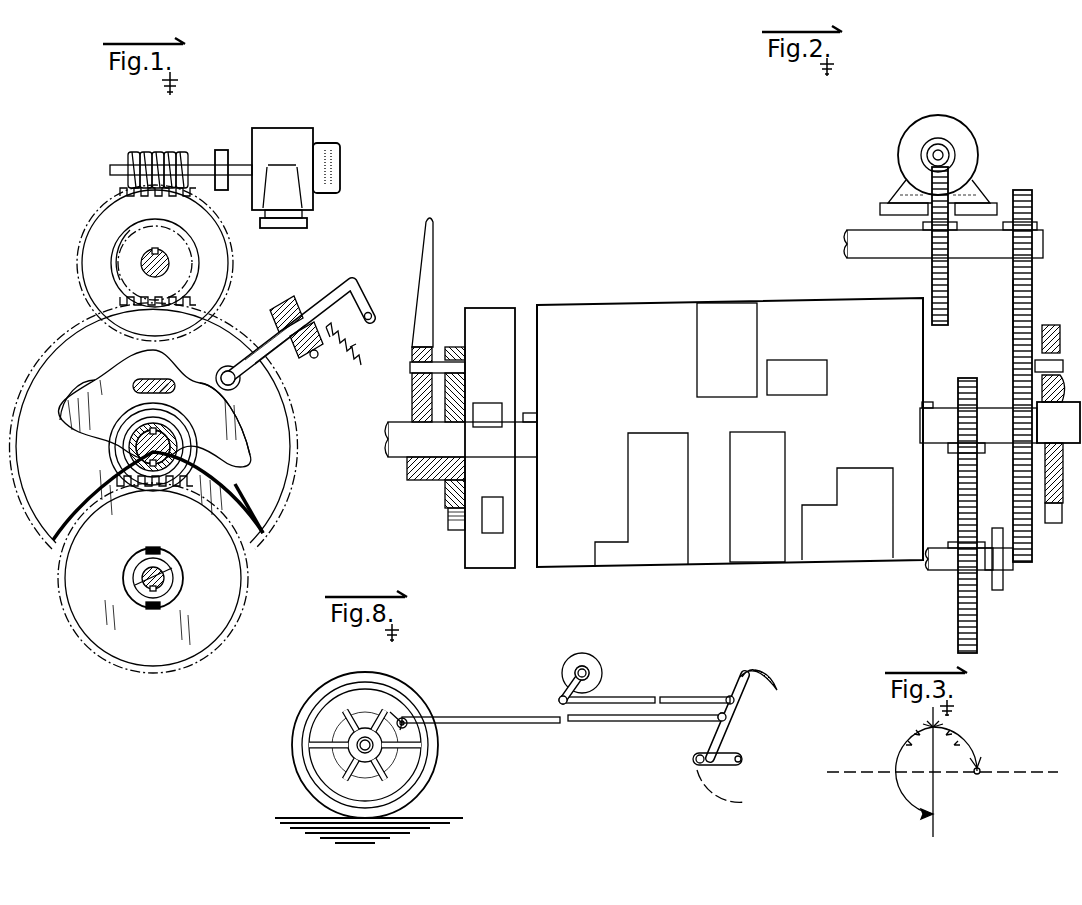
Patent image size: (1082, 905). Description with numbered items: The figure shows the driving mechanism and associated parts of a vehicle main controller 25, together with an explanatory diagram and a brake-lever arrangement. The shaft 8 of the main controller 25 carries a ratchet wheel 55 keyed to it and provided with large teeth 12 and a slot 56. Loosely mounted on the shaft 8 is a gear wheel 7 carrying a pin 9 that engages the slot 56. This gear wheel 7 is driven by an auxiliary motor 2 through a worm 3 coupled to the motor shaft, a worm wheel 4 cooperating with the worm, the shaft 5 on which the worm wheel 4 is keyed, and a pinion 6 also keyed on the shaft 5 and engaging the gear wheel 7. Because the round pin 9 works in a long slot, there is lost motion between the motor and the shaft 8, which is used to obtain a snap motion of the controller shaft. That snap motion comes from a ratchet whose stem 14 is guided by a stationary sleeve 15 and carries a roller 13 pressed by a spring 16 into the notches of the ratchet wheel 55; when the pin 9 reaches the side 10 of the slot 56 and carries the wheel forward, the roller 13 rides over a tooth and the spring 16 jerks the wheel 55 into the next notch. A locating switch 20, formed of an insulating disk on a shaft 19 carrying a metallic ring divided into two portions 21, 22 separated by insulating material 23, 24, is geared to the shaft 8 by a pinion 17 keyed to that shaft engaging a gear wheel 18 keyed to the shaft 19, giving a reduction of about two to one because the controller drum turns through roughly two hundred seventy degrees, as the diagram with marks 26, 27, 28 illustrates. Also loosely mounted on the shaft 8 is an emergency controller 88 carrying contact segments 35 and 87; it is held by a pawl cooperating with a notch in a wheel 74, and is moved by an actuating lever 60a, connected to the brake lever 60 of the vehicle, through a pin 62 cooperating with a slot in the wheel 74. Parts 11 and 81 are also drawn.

In FIG. 1, the auxiliary motor 2 is at (296, 178).
In FIG. 2, the auxiliary motor 2 is at (935, 130).
In FIG. 1, the worm 3 is at (148, 156).
In FIG. 1, the worm wheel 4 is at (108, 220).
In FIG. 2, the worm wheel 4 is at (948, 285).
In FIG. 1, the shaft 5 is at (160, 266).
In FIG. 2, the shaft 5 is at (1036, 246).
In FIG. 1, the pinion 6 is at (123, 255).
In FIG. 2, the pinion 6 is at (1032, 216).
In FIG. 1, the gear wheel 7 is at (153, 426).
In FIG. 2, the gear wheel 7 is at (1032, 306).
In FIG. 1, the shaft 8 is at (172, 450).
In FIG. 2, the shaft 8 is at (1000, 422).
In FIG. 1, the pin 9 is at (170, 383).
In FIG. 2, the pin 9 is at (1063, 366).
In FIG. 1, the side 10 is at (118, 405).
In FIG. 1, the pin 11 is at (176, 386).
In FIG. 1, the large teeth 12 is at (237, 480).
In FIG. 2, the large teeth 12 is at (1058, 523).
In FIG. 1, the roller 13 is at (240, 382).
In FIG. 1, the ratchet stem 14 is at (330, 296).
In FIG. 1, the stationary sleeve 15 is at (284, 312).
In FIG. 1, the spring 16 is at (357, 346).
In FIG. 1, the pinion 17 is at (123, 473).
In FIG. 2, the pinion 17 is at (960, 384).
In FIG. 1, the gear wheel 18 is at (153, 578).
In FIG. 2, the gear wheel 18 is at (958, 490).
In FIG. 1, the shaft 19 is at (143, 577).
In FIG. 2, the shaft 19 is at (943, 570).
In FIG. 1, the locating switch 20 is at (168, 575).
In FIG. 2, the locating switch 20 is at (1000, 580).
In FIG. 1, the ring portion 21 is at (128, 572).
In FIG. 1, the ring portion 22 is at (180, 584).
In FIG. 1, the insulating material 23 is at (160, 550).
In FIG. 1, the insulating material 24 is at (158, 610).
In FIG. 2, the main controller 25 is at (654, 432).
In FIG. 3, the circle diagram 26 is at (930, 728).
In FIG. 3, the bottom point 27 is at (944, 817).
In FIG. 3, the side point 28 is at (978, 780).
In FIG. 2, the contact segment 35 is at (491, 533).
In FIG. 1, the ratchet wheel 55 is at (244, 406).
In FIG. 2, the ratchet wheel 55 is at (1045, 485).
In FIG. 1, the slot 56 is at (148, 382).
In FIG. 8, the brake lever 60 is at (728, 718).
In FIG. 2, the actuating lever 60a is at (425, 248).
In FIG. 8, the actuating lever 60a is at (561, 699).
In FIG. 2, the pin 62 is at (410, 368).
In FIG. 2, the wheel 74 is at (440, 480).
In FIG. 2, the flange 81 is at (448, 528).
In FIG. 2, the contact segment 87 is at (488, 425).
In FIG. 2, the emergency controller 88 is at (490, 438).
In FIG. 8, the emergency controller 88 is at (592, 670).